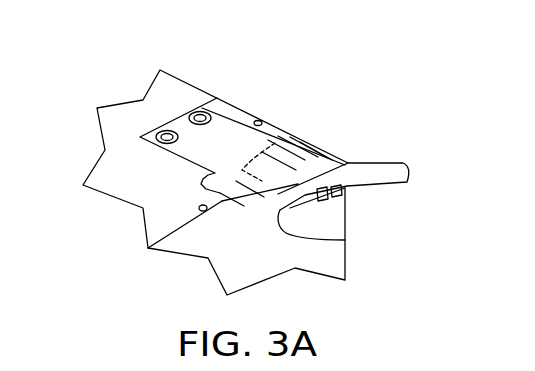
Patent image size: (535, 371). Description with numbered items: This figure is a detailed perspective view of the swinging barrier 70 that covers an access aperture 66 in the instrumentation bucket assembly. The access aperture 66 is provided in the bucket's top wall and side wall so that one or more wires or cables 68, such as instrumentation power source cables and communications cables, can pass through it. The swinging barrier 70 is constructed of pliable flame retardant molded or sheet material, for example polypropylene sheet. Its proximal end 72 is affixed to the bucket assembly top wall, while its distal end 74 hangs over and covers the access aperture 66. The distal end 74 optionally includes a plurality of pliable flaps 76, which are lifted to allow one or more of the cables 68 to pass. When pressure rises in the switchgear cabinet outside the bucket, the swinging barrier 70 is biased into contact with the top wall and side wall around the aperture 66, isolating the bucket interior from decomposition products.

The access aperture 66 is at (275, 143).
The cables 68 is at (380, 170).
The swinging barrier 70 is at (165, 156).
The proximal end 72 is at (213, 112).
The distal end 74 is at (206, 213).
The pliable flaps 76 is at (345, 240).